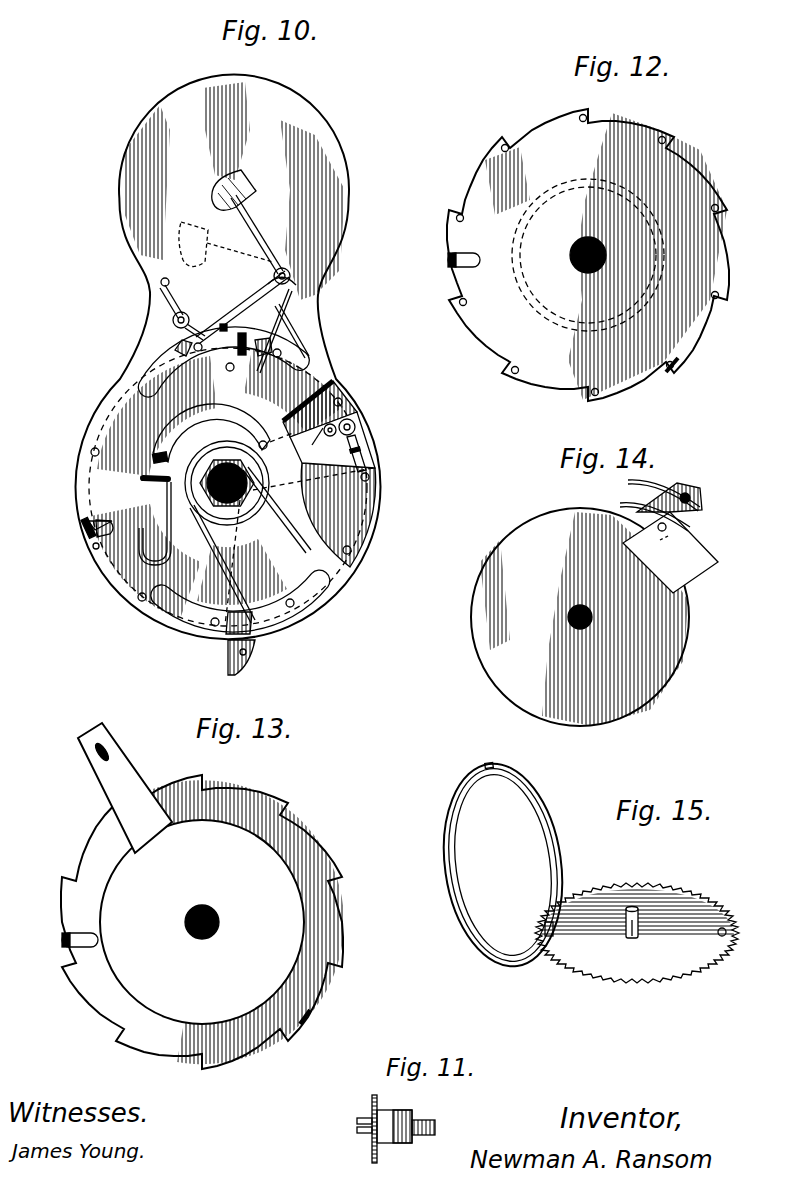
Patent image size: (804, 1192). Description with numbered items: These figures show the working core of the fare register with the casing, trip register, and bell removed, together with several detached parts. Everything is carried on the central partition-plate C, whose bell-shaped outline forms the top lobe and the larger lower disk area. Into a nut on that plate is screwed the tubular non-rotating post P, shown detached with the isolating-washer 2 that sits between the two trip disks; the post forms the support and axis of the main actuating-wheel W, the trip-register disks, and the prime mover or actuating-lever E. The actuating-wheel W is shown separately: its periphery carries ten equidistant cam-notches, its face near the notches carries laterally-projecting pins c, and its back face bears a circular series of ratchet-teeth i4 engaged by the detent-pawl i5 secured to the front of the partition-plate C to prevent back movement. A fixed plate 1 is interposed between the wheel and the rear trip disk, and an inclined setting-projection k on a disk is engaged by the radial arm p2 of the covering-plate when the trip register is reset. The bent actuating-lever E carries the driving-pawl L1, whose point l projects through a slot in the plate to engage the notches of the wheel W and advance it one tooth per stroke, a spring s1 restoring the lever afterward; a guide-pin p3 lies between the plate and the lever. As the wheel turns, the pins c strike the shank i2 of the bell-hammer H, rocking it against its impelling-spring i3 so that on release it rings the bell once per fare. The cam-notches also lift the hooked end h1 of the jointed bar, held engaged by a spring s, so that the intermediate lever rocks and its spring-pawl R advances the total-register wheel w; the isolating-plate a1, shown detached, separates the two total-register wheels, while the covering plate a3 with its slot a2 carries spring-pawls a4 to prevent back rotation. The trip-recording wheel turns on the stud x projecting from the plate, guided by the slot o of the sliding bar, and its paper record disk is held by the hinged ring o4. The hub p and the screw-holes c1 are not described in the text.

In FIG. 10, the partition-plate C is at (228, 356).
In FIG. 10, the bell-hammer H is at (231, 221).
In FIG. 10, the shank i2 is at (225, 305).
In FIG. 10, the impelling-spring i3 is at (282, 325).
In FIG. 10, the detent-pawl i5 is at (207, 433).
In FIG. 10, the spring-pawl R is at (300, 330).
In FIG. 10, the slot o is at (223, 358).
In FIG. 15, the slot o is at (585, 897).
In FIG. 10, the guide-pin p3 is at (222, 379).
In FIG. 10, the hub p is at (252, 500).
In FIG. 10, the radial arm p2 is at (240, 602).
In FIG. 10, the actuating-lever E is at (301, 528).
In FIG. 10, the point l is at (365, 456).
In FIG. 10, the driving-pawl L1 is at (313, 461).
In FIG. 10, the pins c is at (92, 452).
In FIG. 12, the pins c is at (719, 206).
In FIG. 12, the pin c1 is at (512, 373).
In FIG. 10, the main actuating-wheel W is at (350, 525).
In FIG. 13, the main actuating-wheel W is at (117, 790).
In FIG. 10, the hook h1 is at (98, 522).
In FIG. 10, the spring s is at (225, 516).
In FIG. 10, the spring s1 is at (222, 562).
In FIG. 12, the indicating-wheel w is at (700, 252).
In FIG. 12, the ratchet-teeth i4 is at (588, 255).
In FIG. 12, the setting-projection k is at (687, 368).
In FIG. 13, the setting-projection k is at (196, 980).
In FIG. 14, the isolating-plate a1 is at (596, 609).
In FIG. 14, the slot a2 is at (669, 521).
In FIG. 14, the plate a3 is at (670, 552).
In FIG. 14, the spring-pawls a4 is at (660, 498).
In FIG. 13, the fixed plate 1 is at (202, 922).
In FIG. 15, the hinged ring o4 is at (502, 864).
In FIG. 15, the stud x is at (640, 925).
In FIG. 11, the isolating-washer 2 is at (368, 1140).
In FIG. 11, the post P is at (396, 1139).